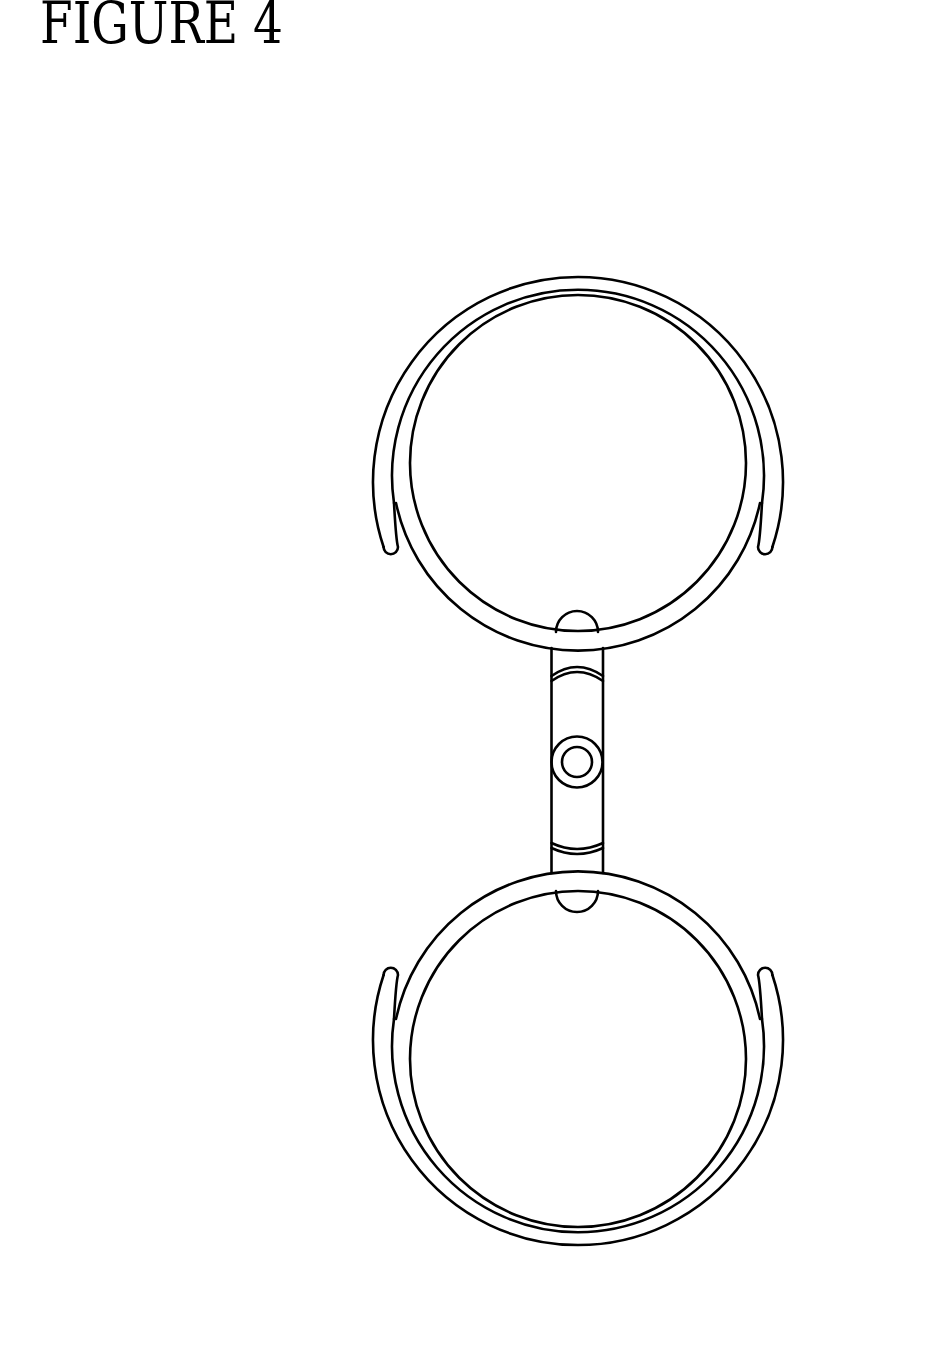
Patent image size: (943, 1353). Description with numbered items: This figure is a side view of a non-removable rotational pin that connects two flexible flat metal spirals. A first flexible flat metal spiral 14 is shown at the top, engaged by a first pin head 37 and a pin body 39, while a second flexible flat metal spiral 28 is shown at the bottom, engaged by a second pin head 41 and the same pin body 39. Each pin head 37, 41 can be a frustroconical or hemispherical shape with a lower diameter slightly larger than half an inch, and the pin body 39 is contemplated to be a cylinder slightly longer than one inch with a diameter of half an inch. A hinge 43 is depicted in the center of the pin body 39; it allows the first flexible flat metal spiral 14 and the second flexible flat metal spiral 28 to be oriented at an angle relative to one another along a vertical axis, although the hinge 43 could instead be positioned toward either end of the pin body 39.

The first flexible flat metal spiral 14 is at (390, 550).
The second flexible flat metal spiral 28 is at (765, 975).
The first pin head 37 is at (577, 624).
The pin body 39 is at (605, 713).
The second pin head 41 is at (577, 898).
The hinge 43 is at (577, 762).